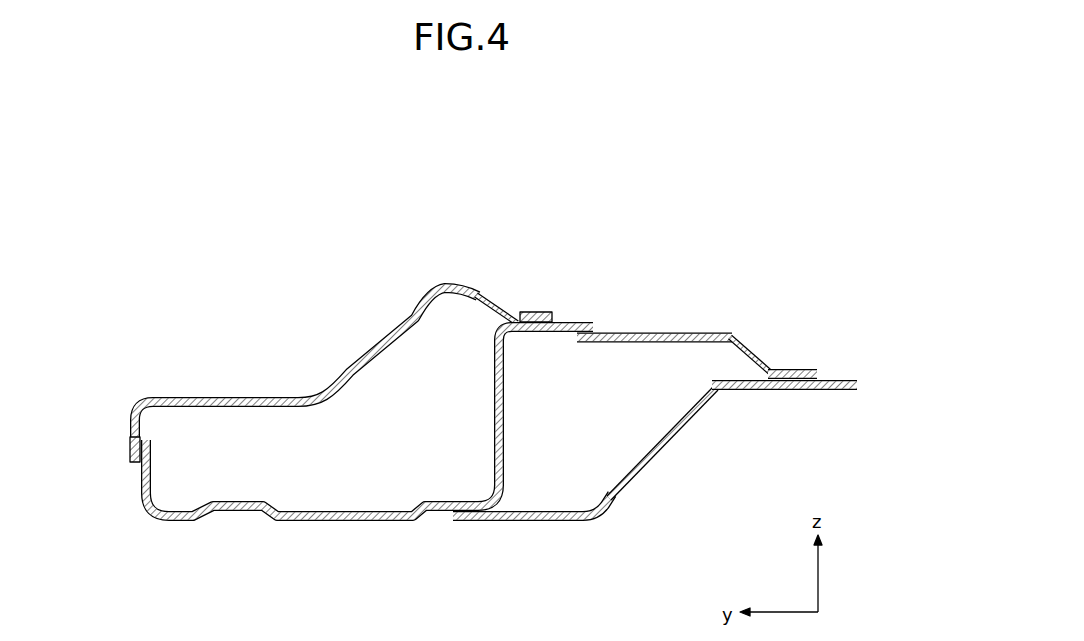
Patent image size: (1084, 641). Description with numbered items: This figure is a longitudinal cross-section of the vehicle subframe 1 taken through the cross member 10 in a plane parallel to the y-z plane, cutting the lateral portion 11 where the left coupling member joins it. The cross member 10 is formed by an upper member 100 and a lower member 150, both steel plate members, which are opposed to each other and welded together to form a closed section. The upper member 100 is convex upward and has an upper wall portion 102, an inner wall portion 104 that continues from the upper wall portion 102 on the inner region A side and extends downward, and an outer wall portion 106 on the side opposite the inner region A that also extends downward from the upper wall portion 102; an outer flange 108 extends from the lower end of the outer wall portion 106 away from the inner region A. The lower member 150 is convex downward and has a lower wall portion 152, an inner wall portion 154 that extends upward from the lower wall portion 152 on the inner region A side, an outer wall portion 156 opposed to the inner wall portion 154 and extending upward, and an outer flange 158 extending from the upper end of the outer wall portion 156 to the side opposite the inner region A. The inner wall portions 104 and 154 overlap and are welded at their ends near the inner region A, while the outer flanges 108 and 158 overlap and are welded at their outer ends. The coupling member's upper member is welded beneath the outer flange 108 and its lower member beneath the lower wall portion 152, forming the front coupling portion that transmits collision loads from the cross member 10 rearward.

The subframe 1 is at (724, 188).
The cross member 10 is at (446, 240).
The lateral portion 11 is at (381, 312).
The upper member 100 is at (291, 357).
The upper wall portion 102 is at (198, 397).
The inner wall portion 104 is at (130, 440).
The outer wall portion 106 is at (497, 294).
The outer flange 108 is at (536, 310).
The lower member 150 is at (220, 543).
The lower wall portion 152 is at (266, 521).
The inner wall portion 154 is at (140, 473).
The outer wall portion 156 is at (506, 450).
The outer flange 158 is at (557, 320).
The inner region A is at (92, 425).